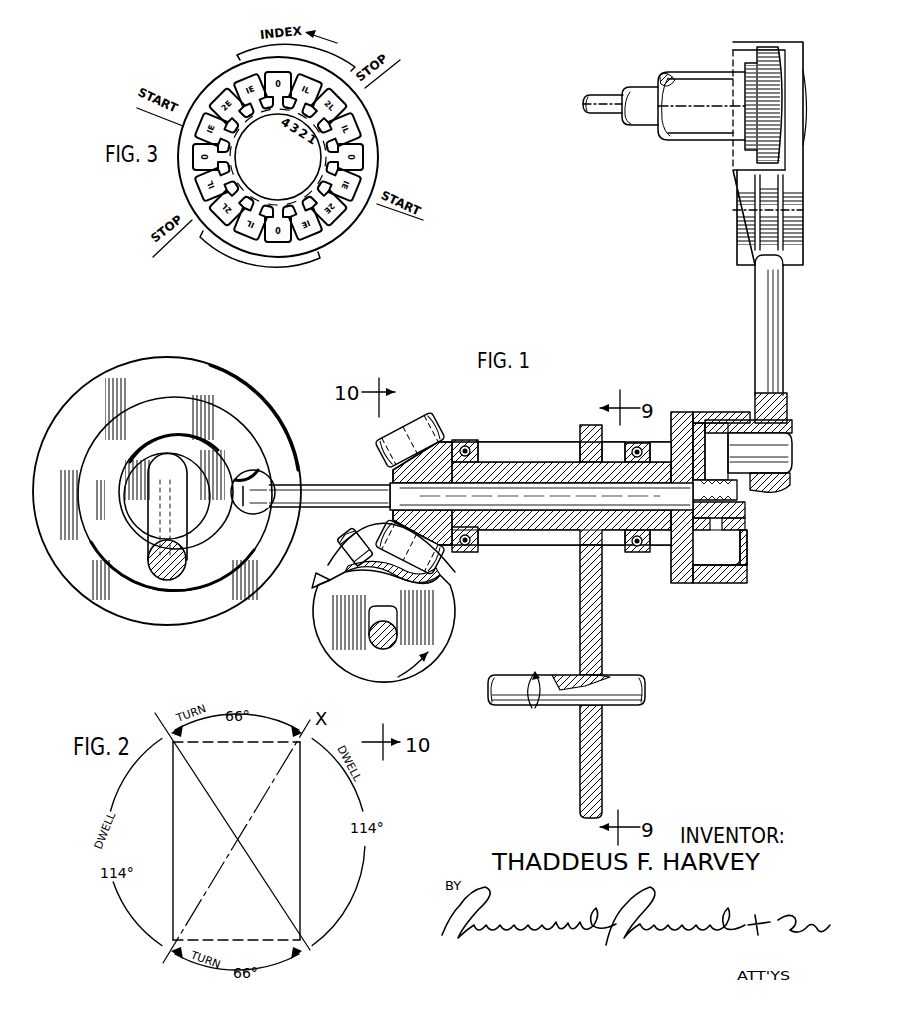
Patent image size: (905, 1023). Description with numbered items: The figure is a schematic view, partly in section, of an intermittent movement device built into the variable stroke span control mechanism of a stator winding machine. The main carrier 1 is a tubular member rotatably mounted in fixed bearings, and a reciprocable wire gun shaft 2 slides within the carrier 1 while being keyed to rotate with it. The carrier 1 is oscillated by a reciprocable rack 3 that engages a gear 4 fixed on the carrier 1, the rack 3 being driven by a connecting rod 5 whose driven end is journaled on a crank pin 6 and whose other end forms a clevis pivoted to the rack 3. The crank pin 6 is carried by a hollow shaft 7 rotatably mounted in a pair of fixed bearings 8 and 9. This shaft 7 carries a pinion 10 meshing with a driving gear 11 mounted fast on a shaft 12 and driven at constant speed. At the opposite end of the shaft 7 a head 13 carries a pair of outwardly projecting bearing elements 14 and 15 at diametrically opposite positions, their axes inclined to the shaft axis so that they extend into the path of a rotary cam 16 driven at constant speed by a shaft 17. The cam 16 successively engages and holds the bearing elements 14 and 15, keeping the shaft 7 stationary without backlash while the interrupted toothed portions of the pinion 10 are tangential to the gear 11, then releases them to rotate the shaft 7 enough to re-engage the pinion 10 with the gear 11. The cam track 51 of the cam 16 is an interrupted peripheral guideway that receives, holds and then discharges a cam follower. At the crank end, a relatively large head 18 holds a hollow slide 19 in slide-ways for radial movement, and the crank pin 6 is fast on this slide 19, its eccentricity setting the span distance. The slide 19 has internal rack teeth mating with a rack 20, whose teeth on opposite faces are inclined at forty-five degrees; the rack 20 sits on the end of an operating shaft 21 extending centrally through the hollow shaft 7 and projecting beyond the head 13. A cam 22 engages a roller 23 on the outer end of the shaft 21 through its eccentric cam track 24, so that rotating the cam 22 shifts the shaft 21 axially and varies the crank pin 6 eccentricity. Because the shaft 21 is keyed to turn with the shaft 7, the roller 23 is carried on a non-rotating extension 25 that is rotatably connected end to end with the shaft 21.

The main carrier 1 is at (690, 72).
The wire gun shaft 2 is at (637, 87).
The rack 3 is at (785, 42).
The gear 4 is at (745, 143).
The connecting rod 5 is at (755, 294).
The crank pin 6 is at (790, 440).
The hollow shaft 7 is at (505, 466).
The fixed bearing 8 is at (472, 440).
The fixed bearing 9 is at (639, 447).
The pinion 10 is at (580, 541).
The driving gear 11 is at (580, 628).
The shaft 12 is at (625, 682).
The head 13 is at (441, 452).
The bearing element 14 is at (400, 434).
The bearing element 15 is at (445, 566).
The rotary cam 16 is at (440, 625).
The shaft 17 is at (385, 650).
The head 18 is at (672, 414).
The hollow slide 19 is at (745, 515).
The rack 20 is at (720, 522).
The operating shaft 21 is at (530, 490).
The cam 22 is at (265, 414).
The roller 23 is at (266, 480).
The cam track 24 is at (133, 578).
The extension 25 is at (316, 490).
The cam track 51 is at (347, 530).